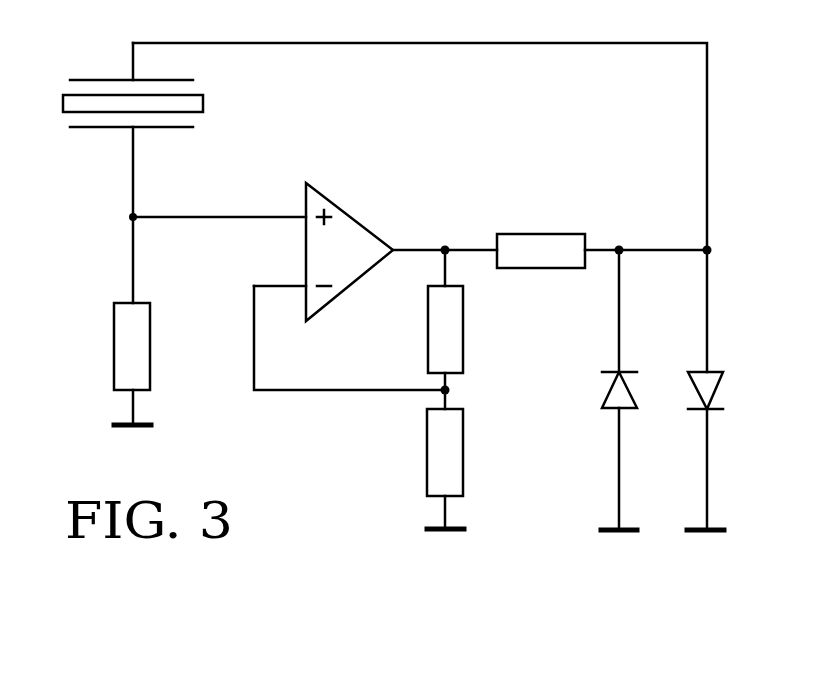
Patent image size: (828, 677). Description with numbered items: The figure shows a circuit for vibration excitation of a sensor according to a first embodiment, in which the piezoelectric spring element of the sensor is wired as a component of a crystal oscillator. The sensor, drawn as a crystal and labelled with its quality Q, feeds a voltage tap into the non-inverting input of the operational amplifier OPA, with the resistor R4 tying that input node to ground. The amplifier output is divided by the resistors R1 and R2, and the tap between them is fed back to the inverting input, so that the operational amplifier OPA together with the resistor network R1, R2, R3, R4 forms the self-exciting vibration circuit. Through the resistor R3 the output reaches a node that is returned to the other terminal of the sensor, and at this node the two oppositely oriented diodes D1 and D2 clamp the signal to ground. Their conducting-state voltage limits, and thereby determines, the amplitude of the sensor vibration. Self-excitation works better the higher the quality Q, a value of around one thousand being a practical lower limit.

The sensor quality Q is at (133, 74).
The operational amplifier OPA is at (349, 246).
The resistor R1 is at (464, 329).
The resistor R2 is at (465, 452).
The resistor R3 is at (541, 235).
The resistor R4 is at (150, 346).
The diode D1 is at (597, 390).
The diode D2 is at (727, 390).